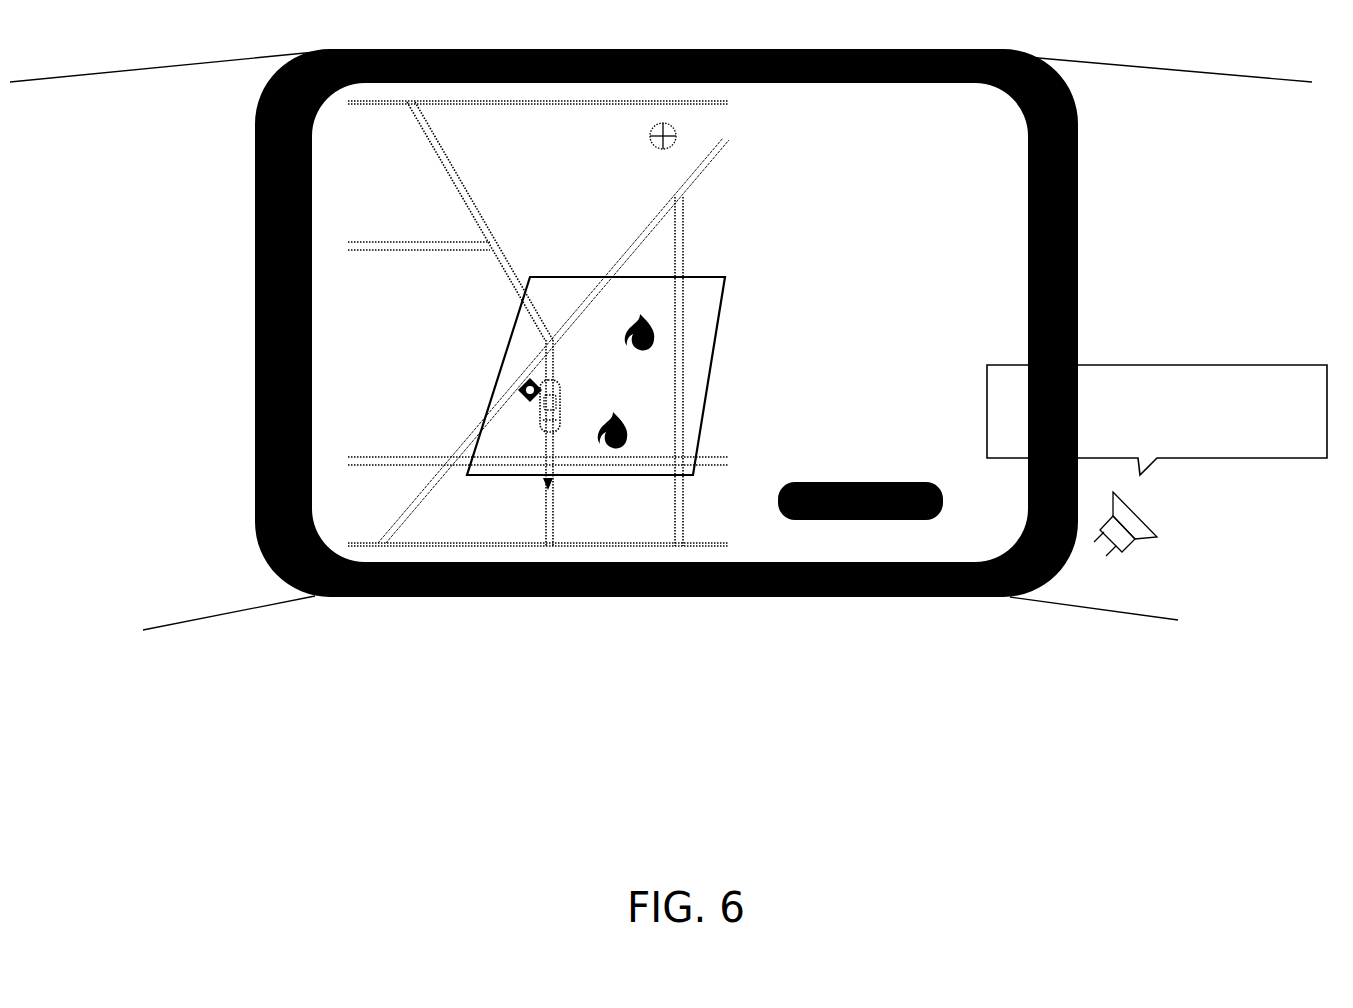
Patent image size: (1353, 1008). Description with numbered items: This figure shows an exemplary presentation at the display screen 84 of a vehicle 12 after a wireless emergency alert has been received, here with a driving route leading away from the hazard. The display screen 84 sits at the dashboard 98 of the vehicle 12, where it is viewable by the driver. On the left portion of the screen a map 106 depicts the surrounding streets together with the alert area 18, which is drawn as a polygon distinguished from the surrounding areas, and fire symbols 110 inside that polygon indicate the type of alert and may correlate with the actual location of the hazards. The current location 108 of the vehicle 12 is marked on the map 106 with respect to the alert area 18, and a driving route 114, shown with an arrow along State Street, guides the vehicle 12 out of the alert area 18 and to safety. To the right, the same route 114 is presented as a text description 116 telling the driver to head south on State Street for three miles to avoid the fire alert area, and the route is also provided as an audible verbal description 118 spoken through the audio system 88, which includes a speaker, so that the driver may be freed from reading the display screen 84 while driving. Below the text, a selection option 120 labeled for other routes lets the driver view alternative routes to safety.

The display screen 84 is at (790, 50).
The dashboard 98 is at (1165, 68).
The map 106 is at (548, 166).
The driving route 114 is at (546, 462).
The alert area 18 is at (718, 340).
The symbol 110 is at (636, 326).
The vehicle 12 is at (549, 382).
The current location 108 is at (528, 396).
The text description 116 is at (893, 216).
The selection option 120 is at (915, 478).
The audible verbal description 118 is at (1258, 365).
The audio system 88 is at (1158, 522).